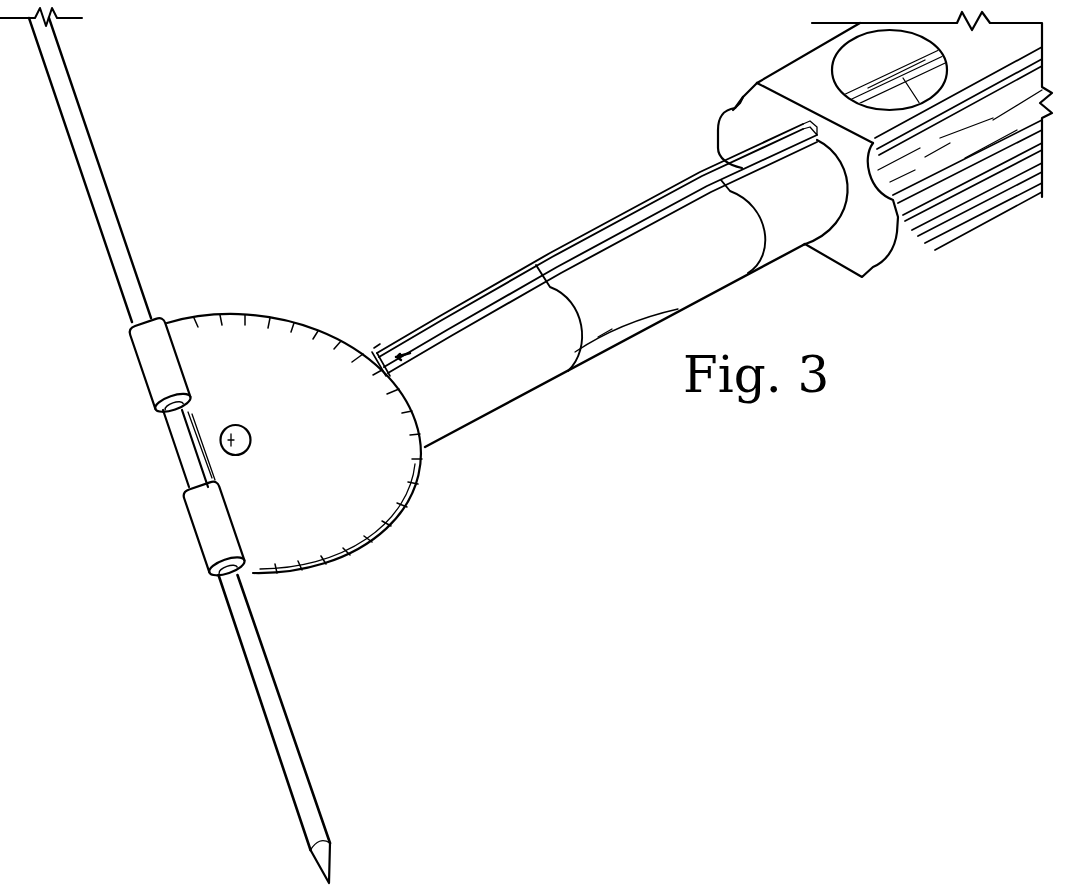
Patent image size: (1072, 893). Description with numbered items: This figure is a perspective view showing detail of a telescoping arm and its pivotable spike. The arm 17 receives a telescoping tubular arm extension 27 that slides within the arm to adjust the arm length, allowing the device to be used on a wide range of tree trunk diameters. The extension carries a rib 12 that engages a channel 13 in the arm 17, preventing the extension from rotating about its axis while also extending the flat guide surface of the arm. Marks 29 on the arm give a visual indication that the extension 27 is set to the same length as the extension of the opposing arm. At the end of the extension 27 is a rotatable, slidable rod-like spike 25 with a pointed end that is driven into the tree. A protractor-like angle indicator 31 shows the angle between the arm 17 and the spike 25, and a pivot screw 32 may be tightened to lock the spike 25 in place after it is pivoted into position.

The rib 12 is at (640, 223).
The channel 13 is at (740, 105).
The arm 17 is at (960, 203).
The spike 25 is at (260, 658).
The tubular arm extension 27 is at (523, 378).
The marks 29 is at (748, 244).
The angle indicator 31 is at (356, 350).
The pivot screw 32 is at (232, 437).